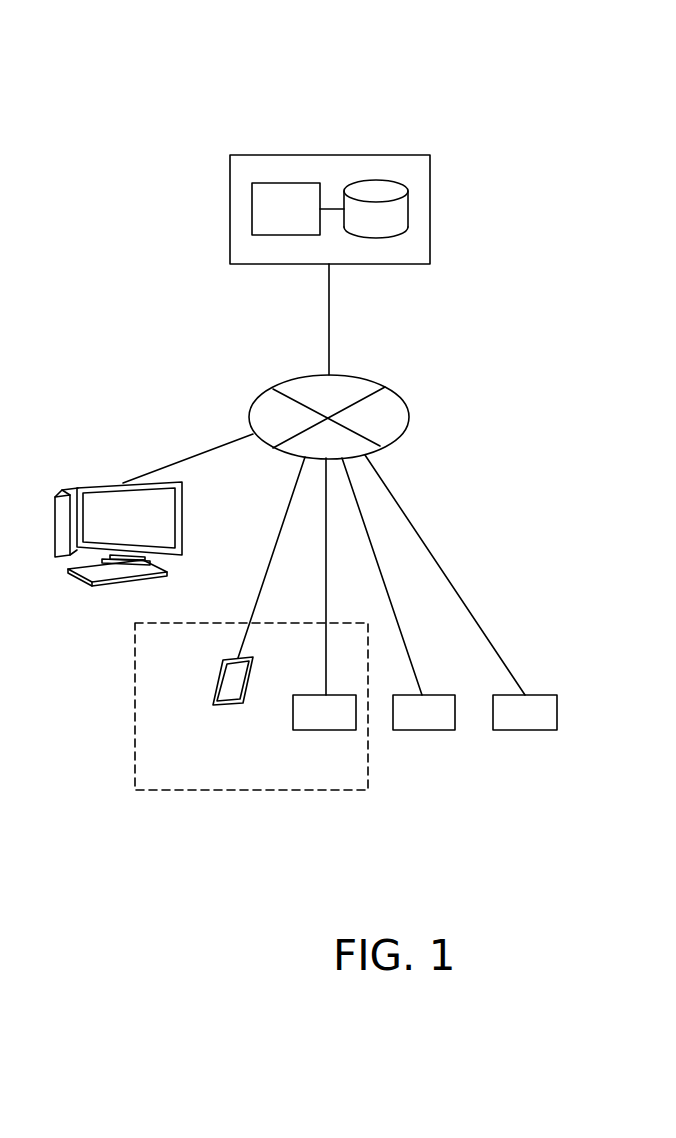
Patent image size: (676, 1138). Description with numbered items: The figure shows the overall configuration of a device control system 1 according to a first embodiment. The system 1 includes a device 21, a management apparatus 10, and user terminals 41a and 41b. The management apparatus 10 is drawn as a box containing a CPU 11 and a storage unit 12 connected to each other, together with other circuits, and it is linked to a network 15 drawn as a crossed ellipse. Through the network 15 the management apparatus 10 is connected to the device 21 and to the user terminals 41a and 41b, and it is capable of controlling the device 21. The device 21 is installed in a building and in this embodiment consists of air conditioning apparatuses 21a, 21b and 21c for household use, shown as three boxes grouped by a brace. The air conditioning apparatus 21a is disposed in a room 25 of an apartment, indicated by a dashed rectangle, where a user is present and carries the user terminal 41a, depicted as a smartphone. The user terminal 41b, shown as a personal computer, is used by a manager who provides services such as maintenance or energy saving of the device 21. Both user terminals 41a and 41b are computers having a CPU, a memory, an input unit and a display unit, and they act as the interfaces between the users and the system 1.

The device control system 1 is at (155, 86).
The management apparatus 10 is at (250, 155).
The CPU 11 is at (287, 183).
The storage unit 12 is at (376, 192).
The network 15 is at (342, 407).
The device 21 is at (560, 735).
The air conditioning apparatus 21a is at (324, 712).
The air conditioning apparatus 21b is at (424, 712).
The air conditioning apparatus 21c is at (525, 712).
The room 25 is at (135, 668).
The user terminal 41a is at (230, 708).
The user terminal 41b is at (96, 487).